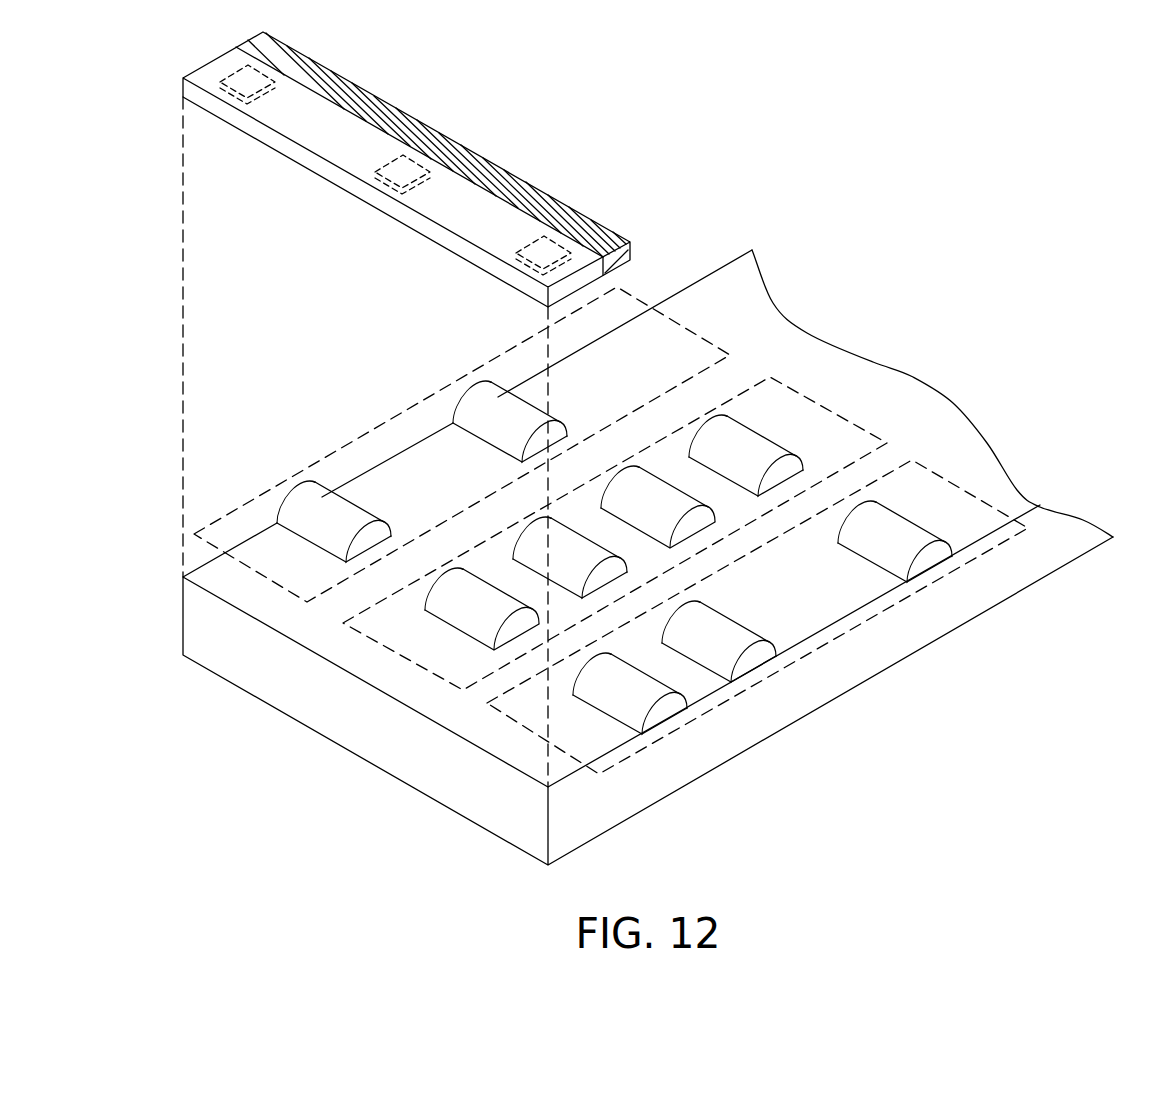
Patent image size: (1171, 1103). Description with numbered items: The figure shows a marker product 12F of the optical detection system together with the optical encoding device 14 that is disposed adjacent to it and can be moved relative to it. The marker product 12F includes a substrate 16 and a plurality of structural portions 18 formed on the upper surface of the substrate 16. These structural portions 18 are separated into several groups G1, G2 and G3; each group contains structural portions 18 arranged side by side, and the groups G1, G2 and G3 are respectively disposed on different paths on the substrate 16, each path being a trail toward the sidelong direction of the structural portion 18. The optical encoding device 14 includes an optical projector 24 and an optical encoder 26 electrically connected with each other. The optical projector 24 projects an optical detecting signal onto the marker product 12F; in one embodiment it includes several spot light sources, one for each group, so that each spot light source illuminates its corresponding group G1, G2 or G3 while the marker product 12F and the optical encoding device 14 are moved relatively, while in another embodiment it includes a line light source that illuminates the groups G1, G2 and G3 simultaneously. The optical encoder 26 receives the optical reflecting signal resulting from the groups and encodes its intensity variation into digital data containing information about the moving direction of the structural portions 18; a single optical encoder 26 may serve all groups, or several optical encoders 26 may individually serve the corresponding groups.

The marker product 12F is at (1057, 672).
The optical encoding device 14 is at (406, 169).
The substrate 16 is at (402, 750).
The structural portion 18 is at (477, 400).
The optical projector 24 is at (455, 197).
The optical encoder 26 is at (543, 149).
The group G1 is at (694, 332).
The group G2 is at (850, 425).
The group G3 is at (993, 507).